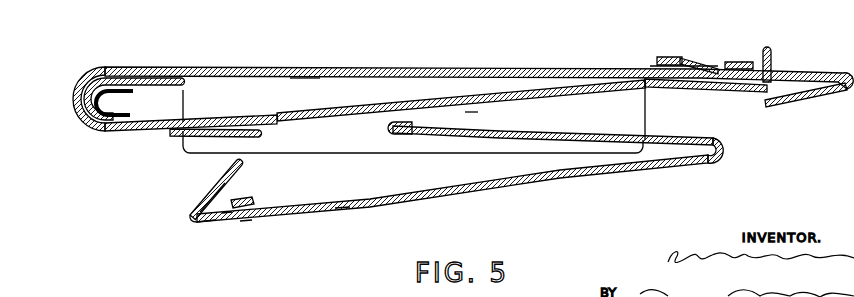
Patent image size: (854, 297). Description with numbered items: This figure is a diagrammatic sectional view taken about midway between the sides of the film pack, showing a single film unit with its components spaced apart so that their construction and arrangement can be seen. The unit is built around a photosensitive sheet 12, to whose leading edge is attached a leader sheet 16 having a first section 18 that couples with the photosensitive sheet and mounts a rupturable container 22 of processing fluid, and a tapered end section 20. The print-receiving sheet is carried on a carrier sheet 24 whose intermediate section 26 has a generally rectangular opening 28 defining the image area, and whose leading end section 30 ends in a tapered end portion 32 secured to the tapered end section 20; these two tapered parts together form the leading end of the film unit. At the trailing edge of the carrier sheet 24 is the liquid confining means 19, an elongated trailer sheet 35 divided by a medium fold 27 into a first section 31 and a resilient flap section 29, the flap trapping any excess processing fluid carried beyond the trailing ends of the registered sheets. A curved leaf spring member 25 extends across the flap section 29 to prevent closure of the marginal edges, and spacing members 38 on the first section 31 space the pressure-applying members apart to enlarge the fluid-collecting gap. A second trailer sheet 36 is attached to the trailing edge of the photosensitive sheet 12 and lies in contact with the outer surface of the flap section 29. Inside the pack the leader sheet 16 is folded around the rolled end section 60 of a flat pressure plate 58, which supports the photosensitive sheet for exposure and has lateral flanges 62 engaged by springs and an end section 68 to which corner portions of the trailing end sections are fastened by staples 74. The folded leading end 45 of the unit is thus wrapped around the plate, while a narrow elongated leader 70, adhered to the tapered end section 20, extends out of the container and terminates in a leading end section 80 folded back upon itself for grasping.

The photosensitive sheet 12 is at (238, 68).
The leader sheet 16 is at (188, 121).
The first section 18 is at (131, 70).
The liquid confining means 19 is at (187, 202).
The tapered end section 20 is at (471, 112).
The rupturable container 22 is at (193, 134).
The carrier sheet 24 is at (706, 133).
The leaf spring member 25 is at (227, 187).
The intermediate section 26 is at (342, 200).
The medium fold 27 is at (193, 218).
The rectangular opening 28 is at (302, 203).
The second resilient flap section 29 is at (214, 186).
The leading end section 30 is at (536, 132).
The first section 31 is at (222, 221).
The tapered end portion 32 is at (405, 135).
The trailer sheet 35 is at (246, 221).
The second trailer sheet 36 is at (709, 69).
The spacing members 38 is at (249, 206).
The folded front end 45 is at (84, 79).
The pressure plate 58 is at (302, 78).
The rolled end section 60 is at (108, 100).
The lateral flanges 62 is at (330, 150).
The end section 68 is at (675, 90).
The leader 70 is at (545, 96).
The staples 74 is at (737, 61).
The leading end section 80 is at (784, 103).